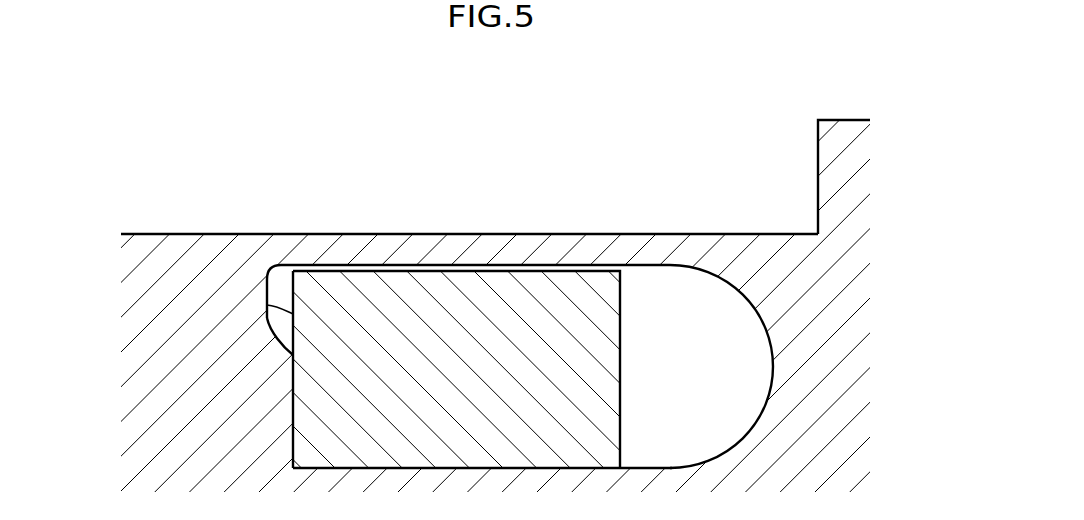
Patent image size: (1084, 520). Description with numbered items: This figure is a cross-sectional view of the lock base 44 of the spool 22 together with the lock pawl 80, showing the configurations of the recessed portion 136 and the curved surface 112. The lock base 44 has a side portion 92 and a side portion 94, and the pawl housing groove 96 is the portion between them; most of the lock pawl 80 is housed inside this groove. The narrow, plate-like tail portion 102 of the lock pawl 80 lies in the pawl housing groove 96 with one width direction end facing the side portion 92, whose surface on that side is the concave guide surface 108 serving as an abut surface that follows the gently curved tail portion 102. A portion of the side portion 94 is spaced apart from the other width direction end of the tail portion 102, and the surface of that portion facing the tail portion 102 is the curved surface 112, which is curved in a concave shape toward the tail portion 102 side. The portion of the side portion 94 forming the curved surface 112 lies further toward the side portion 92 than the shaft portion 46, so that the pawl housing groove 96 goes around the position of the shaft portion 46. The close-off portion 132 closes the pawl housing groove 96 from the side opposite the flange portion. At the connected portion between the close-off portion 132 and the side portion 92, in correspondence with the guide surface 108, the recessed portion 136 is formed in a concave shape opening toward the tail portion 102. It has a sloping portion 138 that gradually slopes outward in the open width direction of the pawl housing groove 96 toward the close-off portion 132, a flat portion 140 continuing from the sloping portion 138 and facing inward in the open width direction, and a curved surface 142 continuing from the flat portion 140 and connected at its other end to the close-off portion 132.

The side portion 92 is at (132, 397).
The side portion 94 is at (860, 358).
The close-off portion 132 is at (543, 234).
The shaft portion 46 is at (818, 147).
The lock base 44 is at (637, 180).
The spool 22 is at (637, 222).
The tail portion 102 is at (520, 318).
The lock pawl 80 is at (440, 271).
The curved surface 142 is at (269, 276).
The sloping portion 138 is at (276, 328).
The pawl housing groove 96 is at (463, 468).
The guide surface 108 is at (293, 412).
The curved surface 112 is at (773, 364).
The recessed portion 136 is at (272, 288).
The flat portion 140 is at (293, 314).